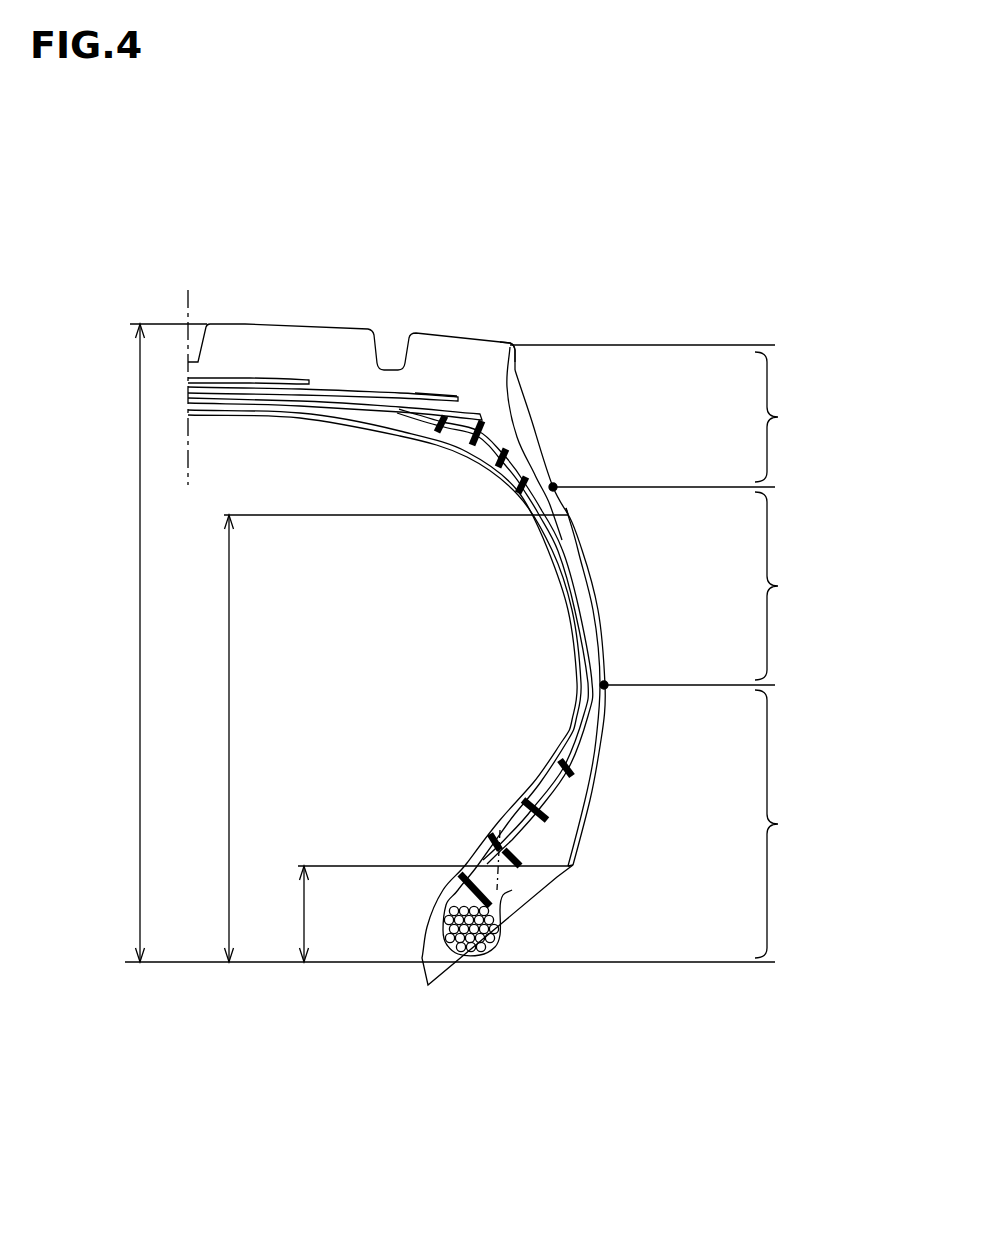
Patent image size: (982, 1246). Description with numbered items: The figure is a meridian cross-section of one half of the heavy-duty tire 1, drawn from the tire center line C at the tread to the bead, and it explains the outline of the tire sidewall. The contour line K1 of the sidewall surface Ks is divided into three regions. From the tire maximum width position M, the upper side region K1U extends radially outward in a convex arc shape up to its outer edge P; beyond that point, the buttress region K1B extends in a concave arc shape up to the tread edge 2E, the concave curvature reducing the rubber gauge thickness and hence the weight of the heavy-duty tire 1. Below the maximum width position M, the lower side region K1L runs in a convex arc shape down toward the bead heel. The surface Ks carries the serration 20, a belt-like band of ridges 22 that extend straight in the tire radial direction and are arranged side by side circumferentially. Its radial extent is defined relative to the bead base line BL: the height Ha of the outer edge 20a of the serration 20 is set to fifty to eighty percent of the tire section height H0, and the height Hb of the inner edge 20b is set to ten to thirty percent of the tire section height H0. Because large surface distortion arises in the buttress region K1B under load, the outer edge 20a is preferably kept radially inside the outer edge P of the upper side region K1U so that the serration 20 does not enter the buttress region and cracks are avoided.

The heavy-duty tire 1 is at (452, 293).
The tread edge 2E is at (518, 332).
The tire equator / center line C is at (186, 373).
The contour line K1 is at (606, 443).
The surface Ks is at (533, 426).
The outer edge P is at (559, 484).
The serration 20 is at (656, 676).
The ridges 22 is at (607, 723).
The outer edge 20a is at (584, 515).
The inner edge 20b is at (575, 871).
The tire maximum width position M is at (606, 682).
The bead base line BL is at (606, 963).
The tire section height H0 is at (153, 643).
The height Ha is at (376, 738).
The height Hb is at (414, 914).
The buttress region K1B is at (797, 417).
The upper side region K1U is at (798, 586).
The lower side region K1L is at (796, 824).